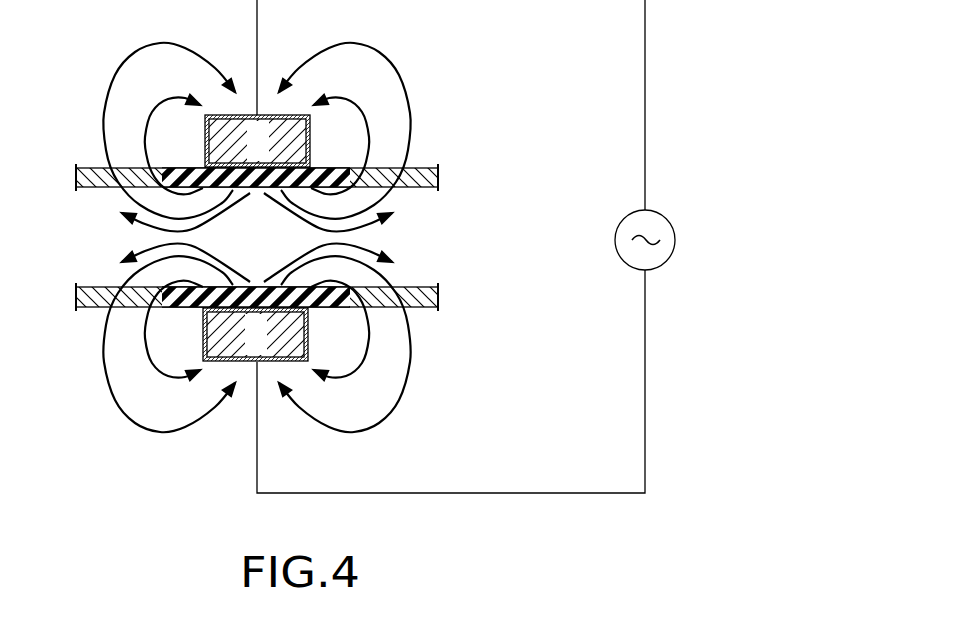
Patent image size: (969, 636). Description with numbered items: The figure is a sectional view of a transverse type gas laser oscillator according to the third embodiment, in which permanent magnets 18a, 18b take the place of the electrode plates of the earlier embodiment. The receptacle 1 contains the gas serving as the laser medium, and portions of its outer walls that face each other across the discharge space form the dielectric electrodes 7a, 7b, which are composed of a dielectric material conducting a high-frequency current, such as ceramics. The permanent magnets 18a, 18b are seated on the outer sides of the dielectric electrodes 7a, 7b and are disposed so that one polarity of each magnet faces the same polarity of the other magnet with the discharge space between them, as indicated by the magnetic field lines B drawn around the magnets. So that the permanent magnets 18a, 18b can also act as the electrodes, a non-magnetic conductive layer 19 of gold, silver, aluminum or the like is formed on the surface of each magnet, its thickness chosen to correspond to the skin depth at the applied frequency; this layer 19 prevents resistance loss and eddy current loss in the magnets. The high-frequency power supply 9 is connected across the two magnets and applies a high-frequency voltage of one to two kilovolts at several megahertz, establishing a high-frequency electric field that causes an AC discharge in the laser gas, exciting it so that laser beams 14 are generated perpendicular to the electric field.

The receptacle 1 is at (447, 180).
The dielectric electrode 7a is at (321, 170).
The dielectric electrode 7b is at (325, 308).
The high-frequency power supply 9 is at (675, 238).
The laser beams 14 is at (398, 245).
The permanent magnet 18a is at (205, 128).
The permanent magnet 18b is at (205, 336).
The non-magnetic conductive layer 19 is at (311, 138).
The magnetic flux B is at (410, 118).